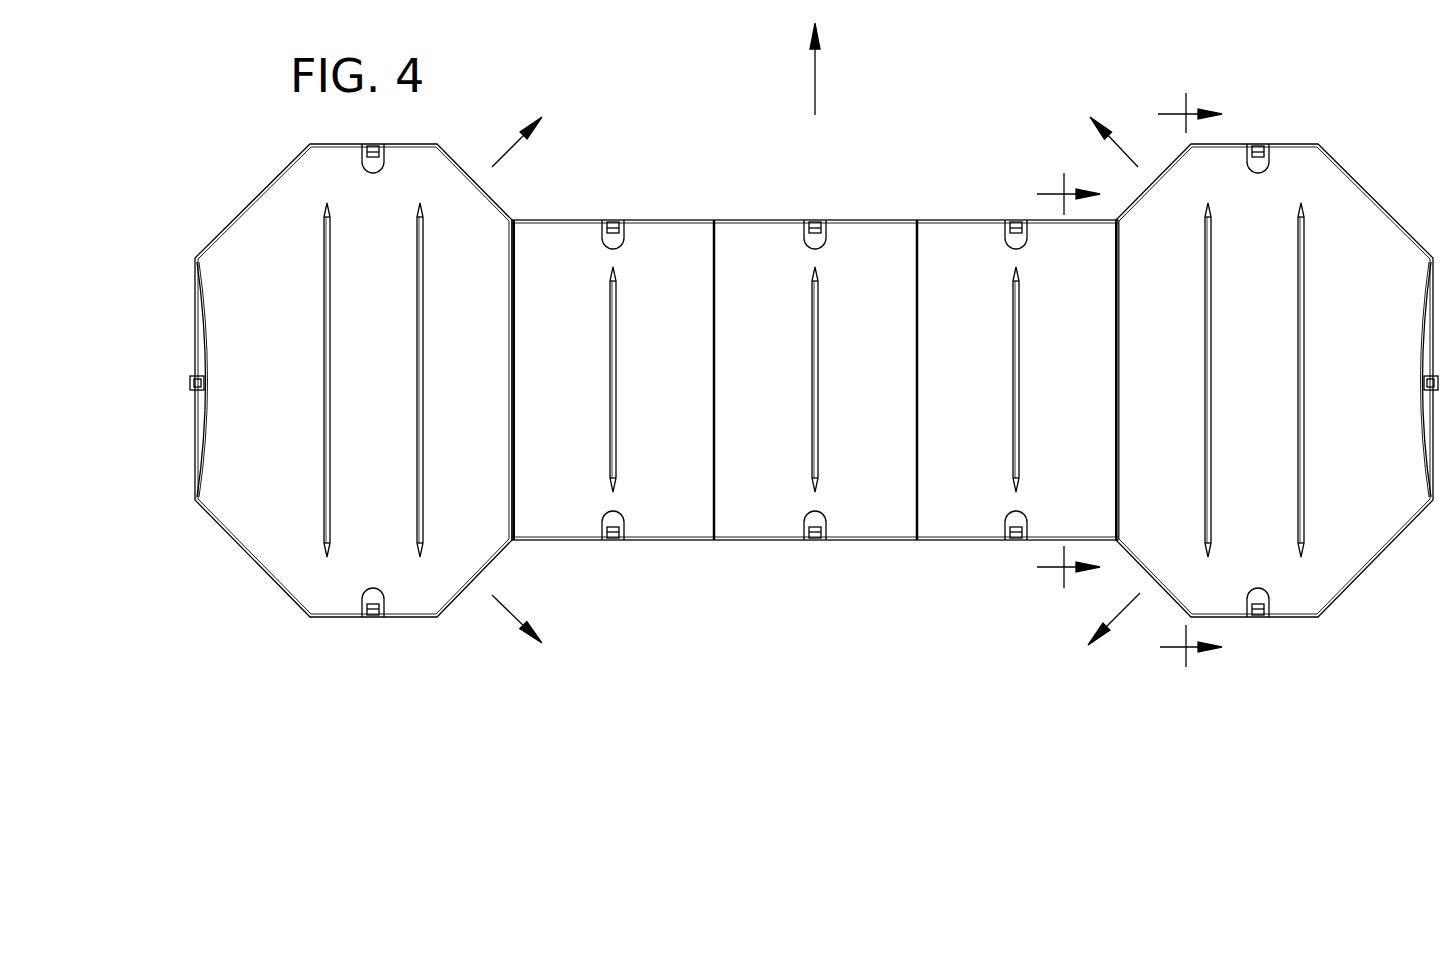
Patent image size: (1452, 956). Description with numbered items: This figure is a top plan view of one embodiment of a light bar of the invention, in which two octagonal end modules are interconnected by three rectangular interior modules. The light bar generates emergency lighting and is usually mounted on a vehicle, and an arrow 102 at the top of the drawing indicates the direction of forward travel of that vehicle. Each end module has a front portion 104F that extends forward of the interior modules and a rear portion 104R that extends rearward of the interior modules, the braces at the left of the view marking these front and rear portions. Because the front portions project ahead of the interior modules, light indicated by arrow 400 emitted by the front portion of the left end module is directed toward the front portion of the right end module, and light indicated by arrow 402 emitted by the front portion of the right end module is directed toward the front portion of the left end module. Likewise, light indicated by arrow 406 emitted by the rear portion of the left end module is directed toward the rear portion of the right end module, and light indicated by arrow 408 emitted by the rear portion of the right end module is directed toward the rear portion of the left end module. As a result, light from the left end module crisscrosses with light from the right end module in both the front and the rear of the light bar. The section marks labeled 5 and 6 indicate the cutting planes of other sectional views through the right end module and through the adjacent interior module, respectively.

The arrow 102 is at (815, 68).
The front portion 104F is at (224, 124).
The rear portion 104R is at (224, 622).
The arrow 400 is at (508, 150).
The arrow 402 is at (1122, 147).
The arrow 406 is at (507, 608).
The arrow 408 is at (1123, 610).
The section line 5- 5 is at (1190, 383).
The section line 6- 6 is at (1068, 384).